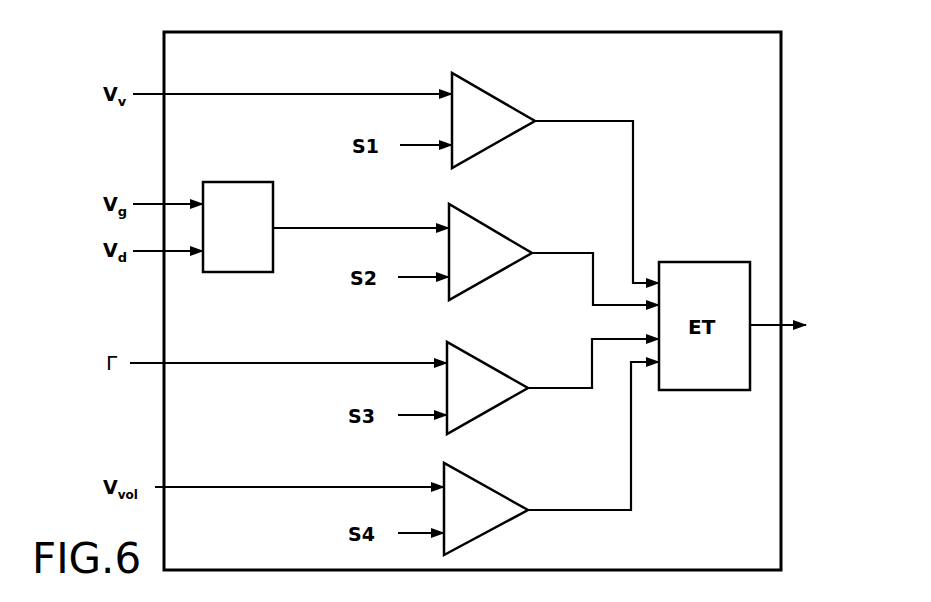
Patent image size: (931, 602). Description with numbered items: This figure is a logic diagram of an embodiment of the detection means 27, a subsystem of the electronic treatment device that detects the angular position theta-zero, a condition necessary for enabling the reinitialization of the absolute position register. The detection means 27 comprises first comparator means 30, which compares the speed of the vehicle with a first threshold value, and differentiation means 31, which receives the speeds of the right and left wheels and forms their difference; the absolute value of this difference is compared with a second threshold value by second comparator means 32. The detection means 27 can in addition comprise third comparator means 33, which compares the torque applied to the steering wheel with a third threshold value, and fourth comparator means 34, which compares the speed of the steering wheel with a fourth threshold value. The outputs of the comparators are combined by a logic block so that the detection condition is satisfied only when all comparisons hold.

The detection means 27 is at (782, 157).
The first comparator means 30 is at (498, 102).
The differentiation means 31 is at (213, 182).
The second comparator means 32 is at (490, 230).
The third comparator means 33 is at (487, 362).
The fourth comparator means 34 is at (480, 483).